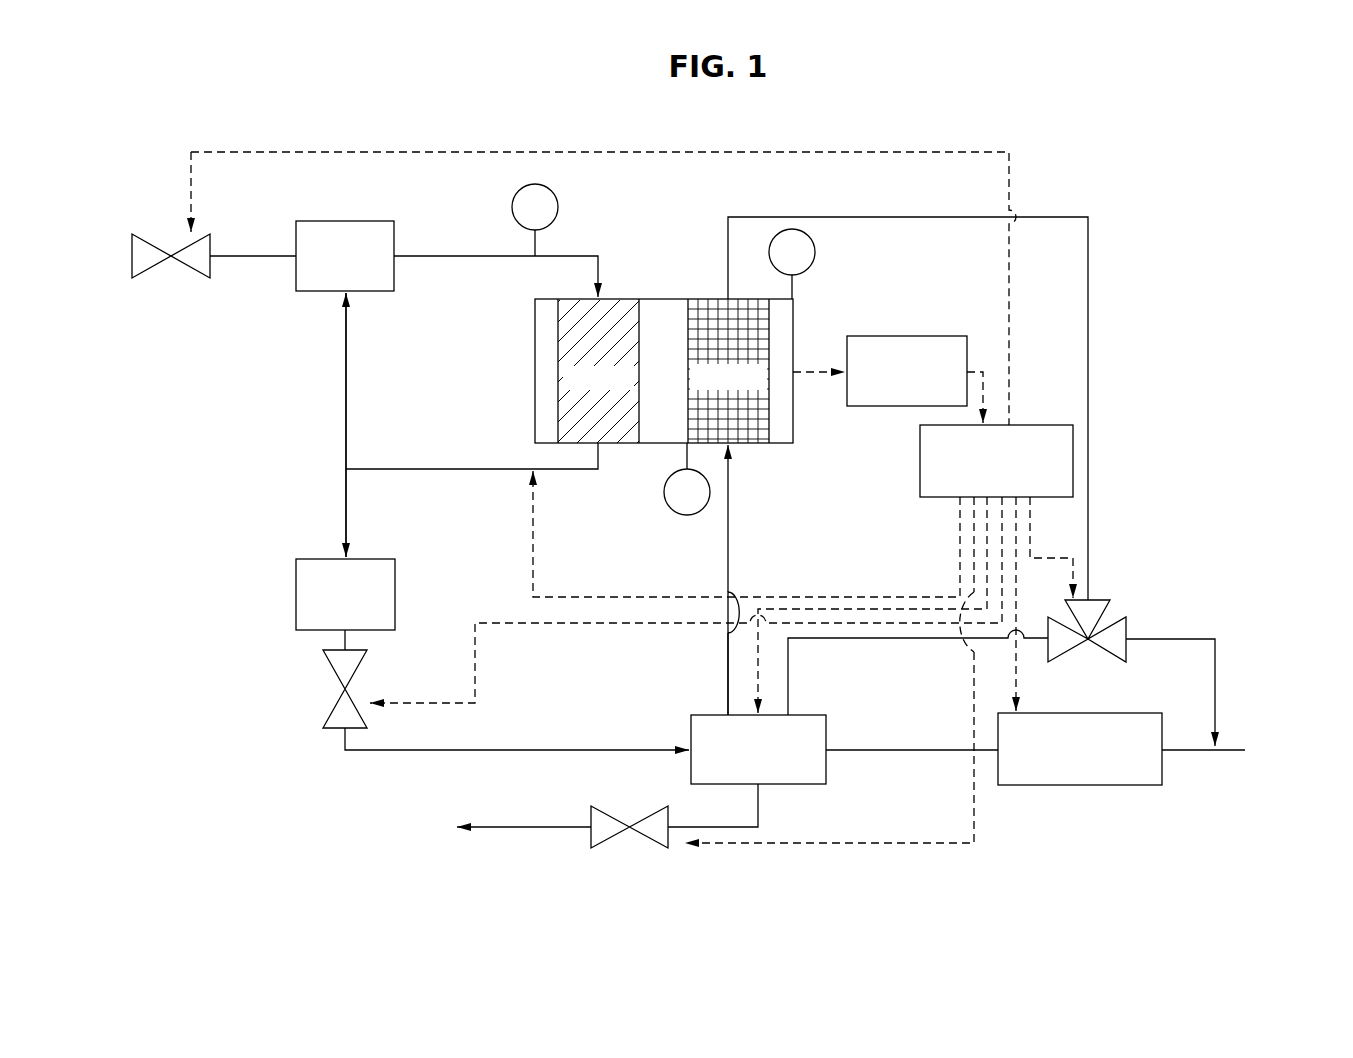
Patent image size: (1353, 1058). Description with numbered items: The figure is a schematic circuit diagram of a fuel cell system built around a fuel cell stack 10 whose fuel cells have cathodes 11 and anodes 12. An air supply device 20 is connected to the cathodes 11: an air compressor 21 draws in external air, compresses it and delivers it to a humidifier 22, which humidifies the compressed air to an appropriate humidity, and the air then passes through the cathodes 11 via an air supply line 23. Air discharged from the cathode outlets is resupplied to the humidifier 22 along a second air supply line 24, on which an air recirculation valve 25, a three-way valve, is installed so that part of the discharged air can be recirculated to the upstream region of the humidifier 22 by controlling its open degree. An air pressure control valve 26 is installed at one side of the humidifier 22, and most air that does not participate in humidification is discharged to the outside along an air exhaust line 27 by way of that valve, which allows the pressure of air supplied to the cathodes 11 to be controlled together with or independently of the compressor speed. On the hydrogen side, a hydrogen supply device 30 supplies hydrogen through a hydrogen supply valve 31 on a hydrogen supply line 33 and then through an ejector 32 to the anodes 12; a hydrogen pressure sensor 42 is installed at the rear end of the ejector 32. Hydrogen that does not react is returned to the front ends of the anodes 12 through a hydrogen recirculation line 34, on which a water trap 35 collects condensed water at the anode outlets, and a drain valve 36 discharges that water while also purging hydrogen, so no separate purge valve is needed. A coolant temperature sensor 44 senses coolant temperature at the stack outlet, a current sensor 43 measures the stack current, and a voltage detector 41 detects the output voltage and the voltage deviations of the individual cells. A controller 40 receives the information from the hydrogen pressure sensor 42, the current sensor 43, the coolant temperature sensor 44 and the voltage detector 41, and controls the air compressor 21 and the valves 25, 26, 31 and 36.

The fuel cell stack 10 is at (660, 297).
The cathodes 11 is at (710, 312).
The anodes 12 is at (615, 312).
The air supply device 20 is at (986, 799).
The air compressor 21 is at (1072, 786).
The humidifier 22 is at (691, 718).
The air supply line 23 is at (728, 517).
The second air supply line 24 is at (1088, 332).
The air recirculation valve 25 is at (1126, 622).
The air pressure control valve 26 is at (591, 808).
The air exhaust line 27 is at (493, 830).
The hydrogen supply device 30 is at (248, 238).
The hydrogen supply valve 31 is at (152, 243).
The ejector 32 is at (315, 292).
The hydrogen supply line 33 is at (456, 253).
The hydrogen recirculation line 34 is at (346, 431).
The water trap 35 is at (312, 559).
The drain valve 36 is at (332, 729).
The controller 40 is at (1033, 425).
The voltage detector 41 is at (896, 407).
The hydrogen pressure sensor 42 is at (535, 184).
The current sensor 43 is at (806, 270).
The coolant temperature sensor 44 is at (664, 492).